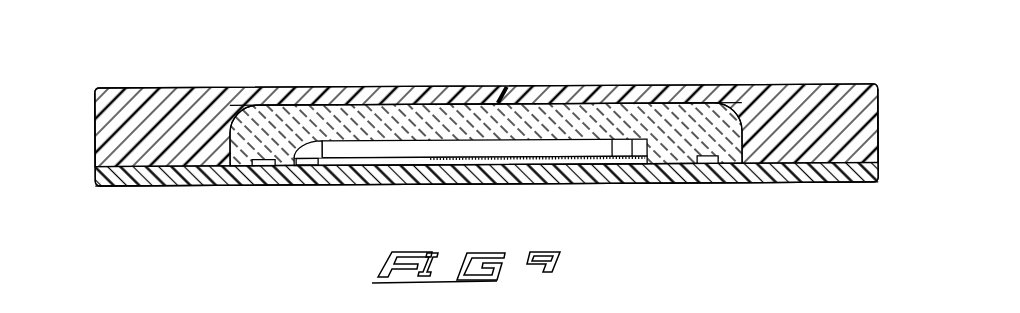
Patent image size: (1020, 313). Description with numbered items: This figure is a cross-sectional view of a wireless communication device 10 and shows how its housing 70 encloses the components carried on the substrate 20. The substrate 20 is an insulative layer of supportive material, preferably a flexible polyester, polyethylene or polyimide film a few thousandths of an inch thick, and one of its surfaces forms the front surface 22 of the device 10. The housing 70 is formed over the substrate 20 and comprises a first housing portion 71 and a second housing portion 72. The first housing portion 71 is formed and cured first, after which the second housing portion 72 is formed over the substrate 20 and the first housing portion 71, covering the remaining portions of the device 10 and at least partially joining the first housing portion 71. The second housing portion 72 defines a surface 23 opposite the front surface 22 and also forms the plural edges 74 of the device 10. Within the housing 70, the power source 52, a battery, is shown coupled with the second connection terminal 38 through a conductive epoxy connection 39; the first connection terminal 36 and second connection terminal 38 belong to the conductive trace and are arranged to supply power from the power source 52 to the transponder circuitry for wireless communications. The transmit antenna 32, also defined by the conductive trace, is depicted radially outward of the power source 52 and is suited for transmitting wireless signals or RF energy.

The wireless communication device 10 is at (780, 32).
The housing 70 is at (180, 60).
The edges 74 is at (95, 140).
The surface 23 is at (585, 86).
The first housing portion 71 is at (503, 93).
The second housing portion 72 is at (642, 82).
The power source 52 is at (383, 148).
The conductive epoxy connection 39 is at (313, 137).
The second connection terminal 38 is at (310, 163).
The first connection terminal 36 is at (494, 170).
The transmit antenna 32 is at (262, 168).
The front surface 22 is at (155, 187).
The substrate 20 is at (780, 190).